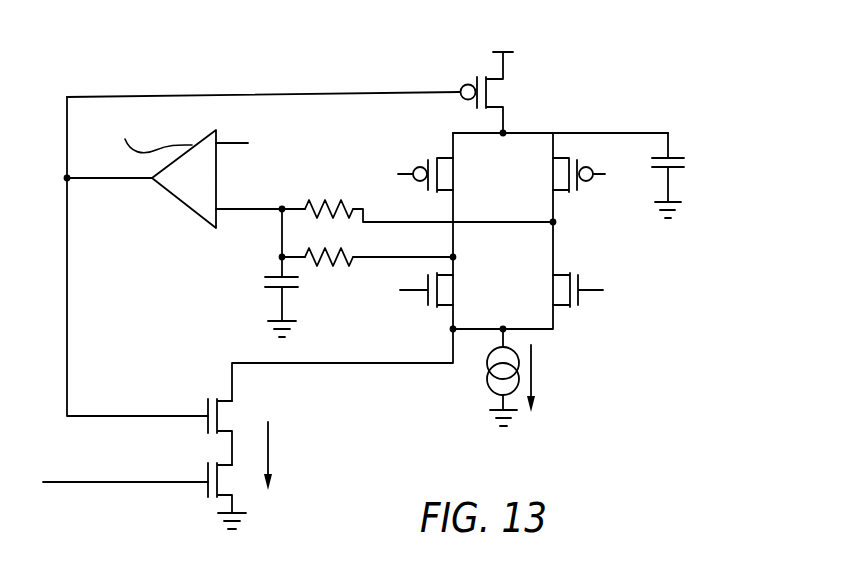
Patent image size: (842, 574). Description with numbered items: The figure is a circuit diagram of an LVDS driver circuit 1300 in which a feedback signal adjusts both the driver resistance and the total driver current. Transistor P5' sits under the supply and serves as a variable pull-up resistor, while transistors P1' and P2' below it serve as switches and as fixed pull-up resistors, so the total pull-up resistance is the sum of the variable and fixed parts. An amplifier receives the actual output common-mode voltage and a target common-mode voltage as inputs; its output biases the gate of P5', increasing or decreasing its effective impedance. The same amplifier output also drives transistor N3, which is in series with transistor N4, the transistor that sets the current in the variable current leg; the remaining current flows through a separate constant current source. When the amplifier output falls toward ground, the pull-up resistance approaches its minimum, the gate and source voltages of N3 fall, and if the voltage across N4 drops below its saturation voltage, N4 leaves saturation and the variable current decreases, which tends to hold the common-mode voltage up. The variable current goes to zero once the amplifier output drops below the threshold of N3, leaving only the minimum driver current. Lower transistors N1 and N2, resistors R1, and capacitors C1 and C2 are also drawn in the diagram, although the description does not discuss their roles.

The driver circuit 1300 is at (138, 70).
The transistor P5' is at (496, 92).
The transistor P1' is at (439, 175).
The transistor P2' is at (567, 175).
The NMOS input transistor N1 is at (439, 290).
The NMOS input transistor N2 is at (566, 290).
The transistor N3 is at (232, 496).
The transistor N4 is at (232, 432).
The resistor R1 is at (329, 221).
The capacitor C1 is at (268, 305).
The capacitor C2 is at (685, 175).